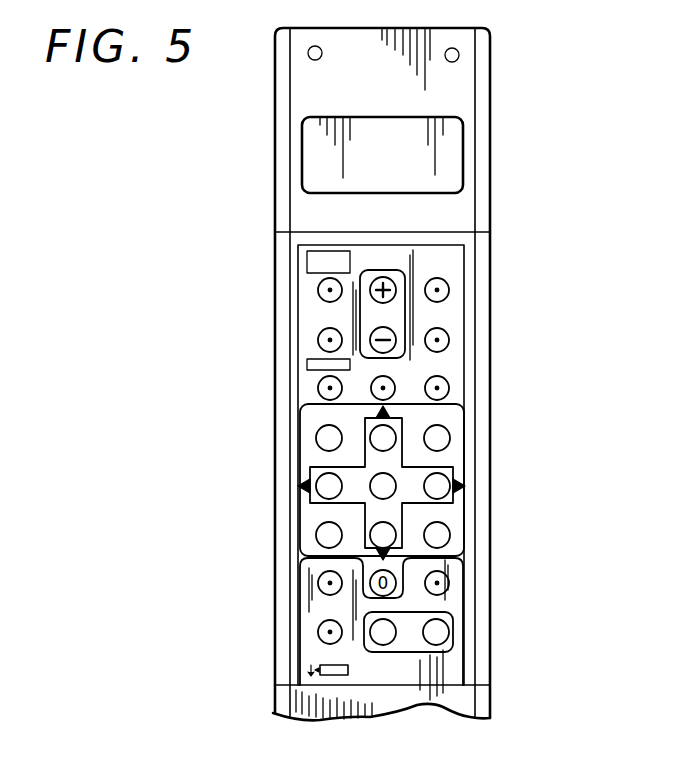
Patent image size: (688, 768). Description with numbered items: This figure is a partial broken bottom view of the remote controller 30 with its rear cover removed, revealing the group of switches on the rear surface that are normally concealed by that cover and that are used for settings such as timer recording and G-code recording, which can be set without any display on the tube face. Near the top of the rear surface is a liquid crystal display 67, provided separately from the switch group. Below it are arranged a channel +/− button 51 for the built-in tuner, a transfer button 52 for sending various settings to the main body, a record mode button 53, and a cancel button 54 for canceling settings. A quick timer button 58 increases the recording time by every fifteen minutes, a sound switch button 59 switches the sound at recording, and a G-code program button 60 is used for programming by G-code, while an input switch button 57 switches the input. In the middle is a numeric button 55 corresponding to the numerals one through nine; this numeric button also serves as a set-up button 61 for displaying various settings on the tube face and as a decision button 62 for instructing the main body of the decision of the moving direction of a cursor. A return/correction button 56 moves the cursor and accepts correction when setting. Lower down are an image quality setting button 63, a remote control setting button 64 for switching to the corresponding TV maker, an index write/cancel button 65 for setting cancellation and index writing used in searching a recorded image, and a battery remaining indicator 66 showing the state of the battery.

The remote controller 30 is at (480, 78).
The liquid crystal display 67 is at (448, 146).
The channel +/− button 51 is at (381, 272).
The transfer button 52 is at (440, 290).
The record mode button 53 is at (440, 340).
The cancel button 54 is at (440, 388).
The numeric button 55 is at (392, 482).
The return/correction button 56 is at (440, 583).
The input switch button 57 is at (386, 391).
The quick timer button 58 is at (320, 285).
The sound switch button 59 is at (320, 338).
The G-code program button 60 is at (320, 386).
The set-up button 61 is at (316, 438).
The decision button 62 is at (302, 486).
The image quality setting button 63 is at (318, 583).
The remote control setting button 64 is at (318, 636).
The index write/cancel button 65 is at (455, 635).
The battery remaining indicator 66 is at (350, 670).